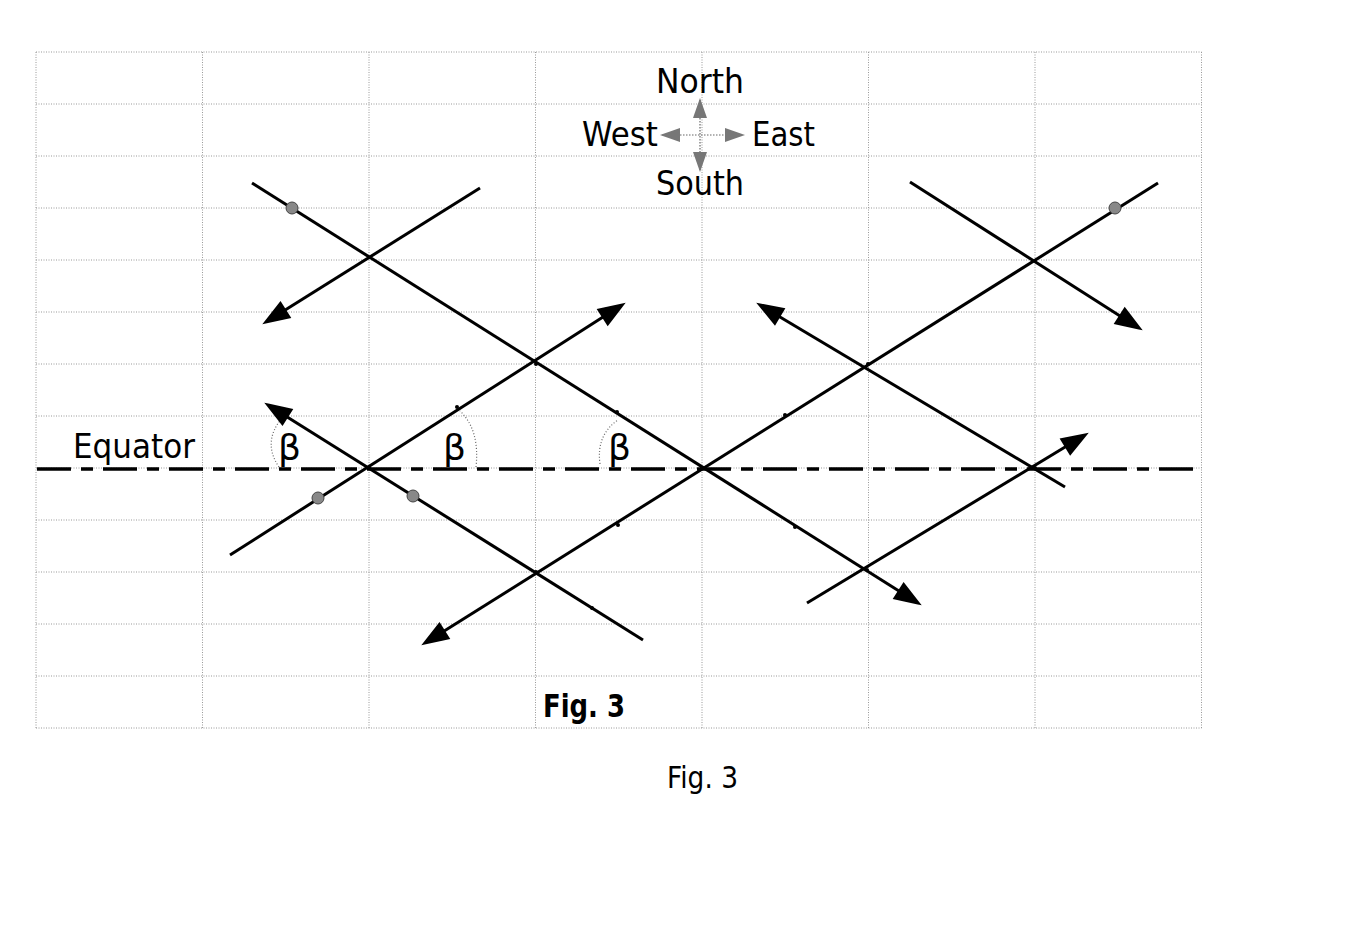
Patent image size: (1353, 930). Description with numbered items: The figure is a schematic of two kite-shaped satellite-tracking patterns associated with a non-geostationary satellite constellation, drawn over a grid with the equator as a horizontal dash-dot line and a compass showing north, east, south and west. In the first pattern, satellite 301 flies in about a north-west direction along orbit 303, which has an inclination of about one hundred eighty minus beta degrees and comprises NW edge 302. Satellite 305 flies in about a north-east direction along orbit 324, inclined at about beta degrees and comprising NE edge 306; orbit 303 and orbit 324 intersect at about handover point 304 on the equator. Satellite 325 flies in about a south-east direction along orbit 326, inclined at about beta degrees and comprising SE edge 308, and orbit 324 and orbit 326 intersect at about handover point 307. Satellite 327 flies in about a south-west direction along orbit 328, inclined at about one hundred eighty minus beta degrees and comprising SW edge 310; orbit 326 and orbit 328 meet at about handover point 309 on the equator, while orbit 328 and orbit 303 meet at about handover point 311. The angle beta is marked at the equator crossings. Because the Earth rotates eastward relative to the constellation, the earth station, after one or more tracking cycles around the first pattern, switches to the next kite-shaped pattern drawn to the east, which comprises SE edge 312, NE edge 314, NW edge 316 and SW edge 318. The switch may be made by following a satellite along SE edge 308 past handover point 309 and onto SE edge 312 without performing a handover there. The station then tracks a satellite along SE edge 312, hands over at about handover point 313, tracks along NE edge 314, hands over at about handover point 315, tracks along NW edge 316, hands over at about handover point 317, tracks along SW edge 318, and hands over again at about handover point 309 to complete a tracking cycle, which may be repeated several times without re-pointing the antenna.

The satellite 301 is at (410, 503).
The NW edge 302 is at (447, 517).
The orbit 303 is at (592, 610).
The handover point 304 is at (364, 473).
The satellite 305 is at (310, 497).
The NE edge 306 is at (457, 407).
The handover point 307 is at (530, 362).
The SE edge 308 is at (617, 412).
The handover point 309 is at (698, 462).
The SW edge 310 is at (617, 526).
The handover point 311 is at (545, 576).
The SE edge 312 is at (795, 527).
The handover point 313 is at (860, 573).
The NE edge 314 is at (957, 518).
The handover point 315 is at (1042, 465).
The NW edge 316 is at (940, 411).
The handover point 317 is at (872, 366).
The SW edge 318 is at (785, 415).
The orbit 324 is at (267, 532).
The satellite 325 is at (285, 211).
The orbit 326 is at (330, 233).
The satellite 327 is at (1122, 211).
The orbit 328 is at (1085, 232).